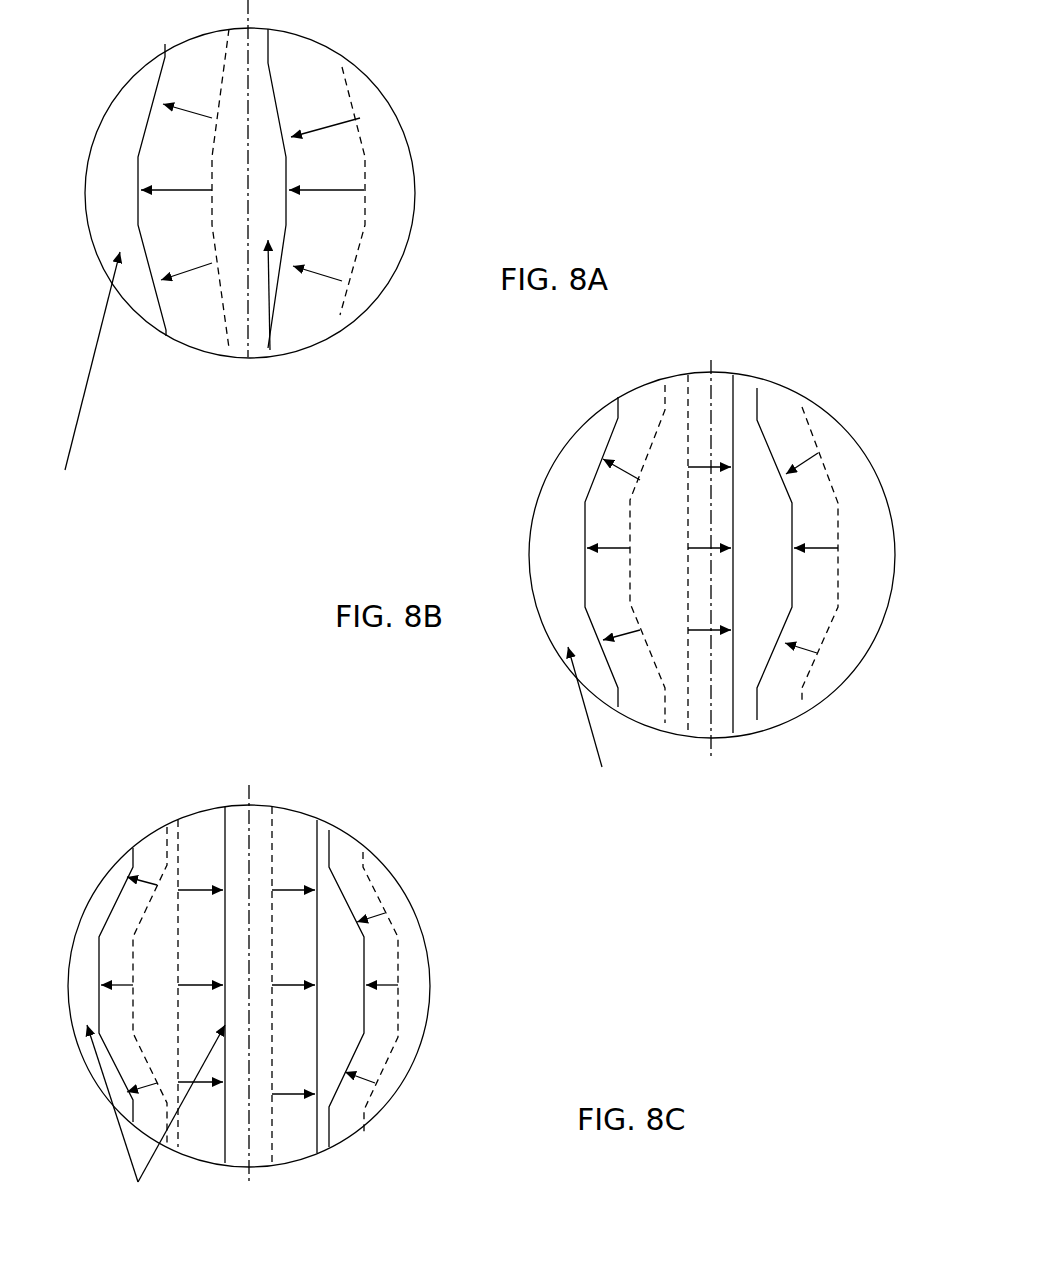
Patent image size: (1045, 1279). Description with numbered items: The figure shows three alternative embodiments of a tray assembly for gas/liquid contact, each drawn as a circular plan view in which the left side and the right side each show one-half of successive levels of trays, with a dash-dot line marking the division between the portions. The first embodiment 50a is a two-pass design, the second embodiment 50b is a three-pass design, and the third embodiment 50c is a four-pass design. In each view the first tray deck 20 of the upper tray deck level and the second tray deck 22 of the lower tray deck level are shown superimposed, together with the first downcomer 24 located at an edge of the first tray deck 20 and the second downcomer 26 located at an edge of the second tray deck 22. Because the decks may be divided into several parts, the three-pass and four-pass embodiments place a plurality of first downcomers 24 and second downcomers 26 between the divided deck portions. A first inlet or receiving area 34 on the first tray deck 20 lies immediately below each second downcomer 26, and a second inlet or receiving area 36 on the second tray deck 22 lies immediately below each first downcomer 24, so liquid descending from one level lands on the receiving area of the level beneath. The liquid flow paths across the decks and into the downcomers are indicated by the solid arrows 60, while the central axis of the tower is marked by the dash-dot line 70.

In FIG. 8A, the first tray deck 20 is at (193, 317).
In FIG. 8B, the first tray deck 20 is at (638, 662).
In FIG. 8C, the first tray deck 20 is at (157, 858).
In FIG. 8A, the second tray deck 22 is at (305, 298).
In FIG. 8B, the second tray deck 22 is at (820, 500).
In FIG. 8C, the second tray deck 22 is at (285, 1038).
In FIG. 8A, the first downcomer 24 is at (84, 371).
In FIG. 8B, the first downcomer 24 is at (589, 721).
In FIG. 8C, the first downcomer 24 is at (156, 1117).
In FIG. 8A, the second downcomer 26 is at (270, 330).
In FIG. 8B, the second downcomer 26 is at (768, 612).
In FIG. 8C, the second downcomer 26 is at (342, 925).
In FIG. 8A, the first inlet (receiving) area 34 is at (230, 155).
In FIG. 8B, the first inlet (receiving) area 34 is at (673, 503).
In FIG. 8C, the first inlet (receiving) area 34 is at (157, 965).
In FIG. 8A, the second inlet (receiving) area 36 is at (398, 155).
In FIG. 8B, the second inlet (receiving) area 36 is at (877, 590).
In FIG. 8C, the second inlet (receiving) area 36 is at (270, 1128).
In FIG. 8A, the first embodiment 50a is at (512, 180).
In FIG. 8B, the second embodiment 50b is at (376, 518).
In FIG. 8C, the third embodiment 50c is at (642, 985).
In FIG. 8A, the solid arrows 60 is at (323, 128).
In FIG. 8B, the solid arrows 60 is at (620, 550).
In FIG. 8C, the solid arrows 60 is at (380, 983).
In FIG. 8A, the central axis 70 is at (248, 357).
In FIG. 8B, the central axis 70 is at (712, 392).
In FIG. 8C, the central axis 70 is at (248, 1147).